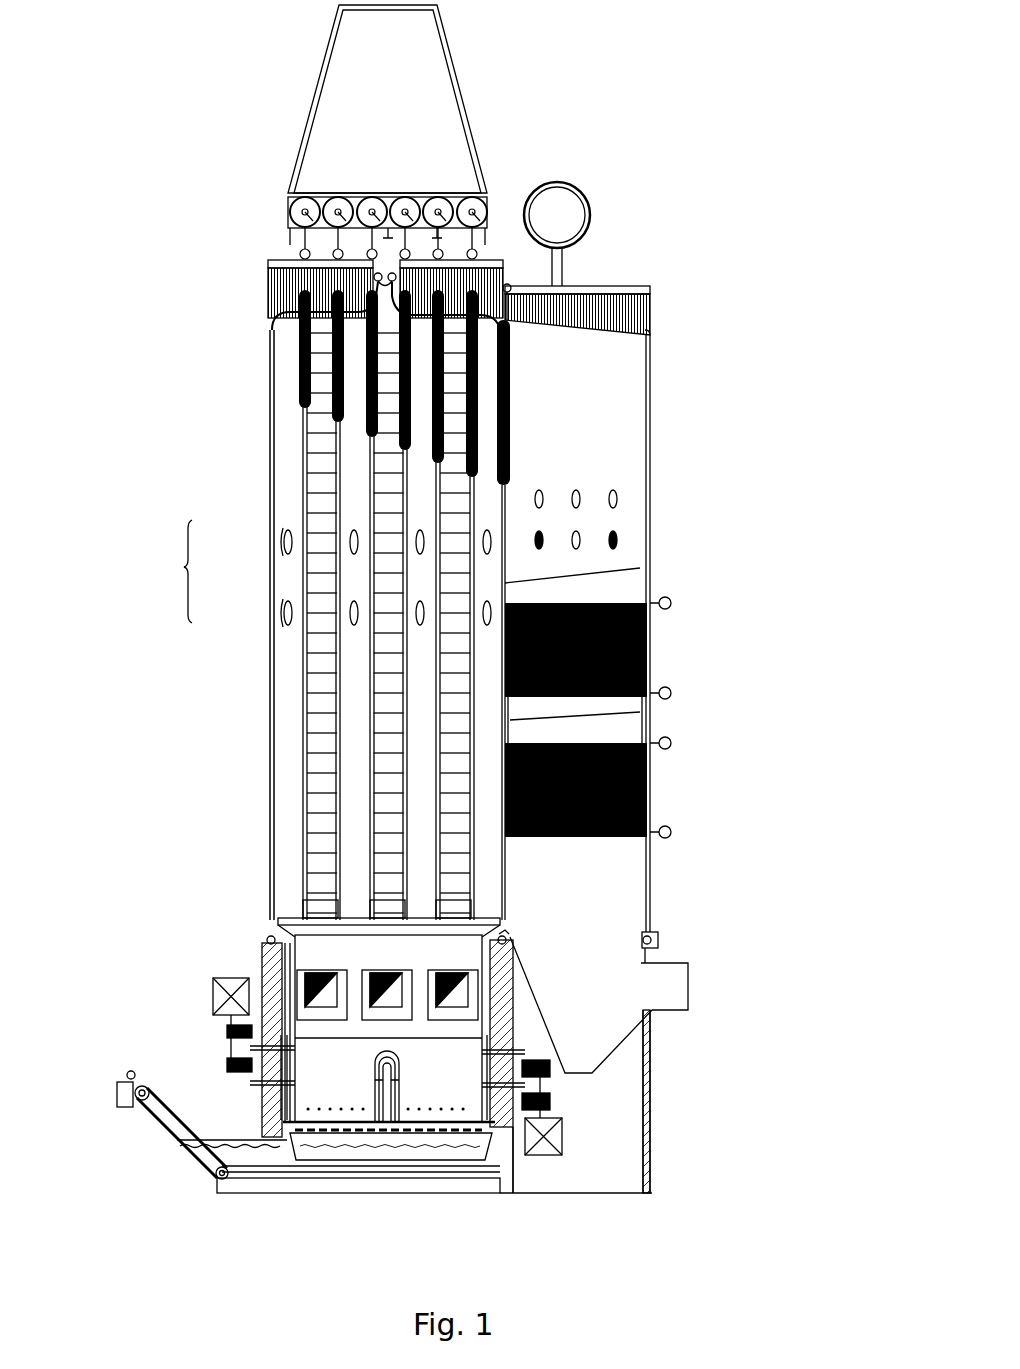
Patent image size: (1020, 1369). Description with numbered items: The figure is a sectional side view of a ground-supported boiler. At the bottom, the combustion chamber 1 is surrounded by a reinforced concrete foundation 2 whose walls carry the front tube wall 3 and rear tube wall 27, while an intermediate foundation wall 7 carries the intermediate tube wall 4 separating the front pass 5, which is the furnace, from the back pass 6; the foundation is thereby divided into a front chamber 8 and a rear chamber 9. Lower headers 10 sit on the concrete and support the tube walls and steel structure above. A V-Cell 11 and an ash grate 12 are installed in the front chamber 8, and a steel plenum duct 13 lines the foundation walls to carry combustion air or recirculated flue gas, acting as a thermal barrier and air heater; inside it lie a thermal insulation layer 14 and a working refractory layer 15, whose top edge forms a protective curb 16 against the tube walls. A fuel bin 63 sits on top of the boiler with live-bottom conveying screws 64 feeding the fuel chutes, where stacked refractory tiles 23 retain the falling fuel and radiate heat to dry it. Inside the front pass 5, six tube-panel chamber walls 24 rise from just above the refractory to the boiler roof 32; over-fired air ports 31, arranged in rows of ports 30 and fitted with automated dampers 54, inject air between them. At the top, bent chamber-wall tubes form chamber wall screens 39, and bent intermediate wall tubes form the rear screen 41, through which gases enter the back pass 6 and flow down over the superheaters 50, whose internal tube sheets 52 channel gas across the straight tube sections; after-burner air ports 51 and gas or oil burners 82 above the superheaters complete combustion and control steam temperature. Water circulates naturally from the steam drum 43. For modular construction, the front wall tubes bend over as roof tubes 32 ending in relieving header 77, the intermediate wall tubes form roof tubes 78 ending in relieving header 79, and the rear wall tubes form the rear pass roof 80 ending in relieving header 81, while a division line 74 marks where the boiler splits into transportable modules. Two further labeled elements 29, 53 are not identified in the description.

The combustion chamber 1 is at (330, 955).
The reinforced concrete foundation 2 is at (262, 972).
The front tube wall 3 is at (272, 418).
The intermediate tube wall 4 is at (640, 568).
The front pass 5 is at (355, 715).
The back pass 6 is at (575, 390).
The intermediate foundation wall 7 is at (513, 1173).
The front chamber 8 is at (290, 1198).
The rear chamber 9 is at (597, 1143).
The lower headers 10 is at (269, 937).
The V-Cell 11 is at (318, 1100).
The ash grate 12 is at (298, 1130).
The steel plenum duct 13 is at (282, 965).
The thermal insulation layer 14 is at (285, 1090).
The working refractory layer 15 is at (285, 1100).
The protective curb 16 is at (505, 932).
The refractory tiles 23 is at (452, 478).
The chamber walls 24 is at (470, 895).
The rear tube wall 27 is at (650, 490).
The inspection port 29 is at (355, 528).
The air port rows 30 is at (272, 541).
The over-fired air ports 31 is at (186, 567).
The roof tubes 32 is at (300, 305).
The chamber wall screens 39 is at (470, 470).
The rear screen 41 is at (512, 374).
The steam drum 43 is at (577, 188).
The superheaters 50 is at (650, 650).
The after-burner air ports 51 is at (618, 495).
The internal tube sheets 52 is at (650, 725).
The valve 53 is at (660, 940).
The automated dampers 54 is at (227, 1065).
The fuel bin 63 is at (457, 73).
The conveying screws 64 is at (452, 197).
The module division line 74 is at (395, 1110).
The relieving header 77 is at (360, 268).
The roof tubes 78 is at (451, 305).
The relieving header 79 is at (378, 277).
The rear pass roof 80 is at (630, 293).
The relieving header 81 is at (512, 287).
The gas or oil burners 82 is at (615, 540).